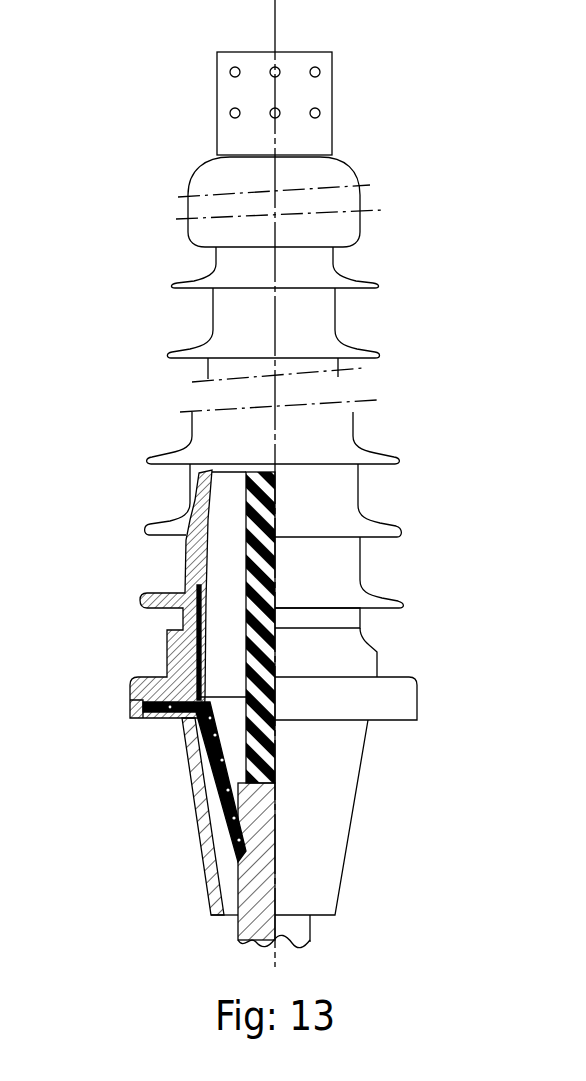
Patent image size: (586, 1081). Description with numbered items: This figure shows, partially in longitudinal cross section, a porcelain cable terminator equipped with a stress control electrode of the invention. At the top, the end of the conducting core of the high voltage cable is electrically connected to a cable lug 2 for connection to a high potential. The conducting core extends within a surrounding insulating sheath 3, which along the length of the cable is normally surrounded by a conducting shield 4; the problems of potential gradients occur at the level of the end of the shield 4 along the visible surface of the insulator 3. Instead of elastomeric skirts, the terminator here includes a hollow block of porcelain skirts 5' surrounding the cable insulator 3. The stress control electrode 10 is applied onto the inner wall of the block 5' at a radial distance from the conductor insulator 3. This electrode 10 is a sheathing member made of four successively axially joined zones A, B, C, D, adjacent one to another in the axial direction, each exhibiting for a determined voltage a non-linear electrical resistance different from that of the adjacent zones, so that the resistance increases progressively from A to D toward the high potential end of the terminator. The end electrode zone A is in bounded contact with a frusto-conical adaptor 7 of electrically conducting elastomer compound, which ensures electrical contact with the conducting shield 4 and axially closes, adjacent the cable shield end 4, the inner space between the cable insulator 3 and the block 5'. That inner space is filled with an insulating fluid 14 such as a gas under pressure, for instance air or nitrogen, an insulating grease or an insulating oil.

The cable lug 2 is at (300, 128).
The insulating sheath 3 is at (276, 512).
The insulating fluid 14 is at (217, 602).
The stress control electrode 10 is at (208, 640).
The hollow block of porcelain skirts 5' is at (141, 594).
The electrode zone D is at (177, 512).
The electrode zone C is at (187, 558).
The electrode zone B is at (177, 583).
The electrode zone A is at (190, 683).
The adaptor 7 is at (227, 798).
The conducting shield 4 is at (237, 915).